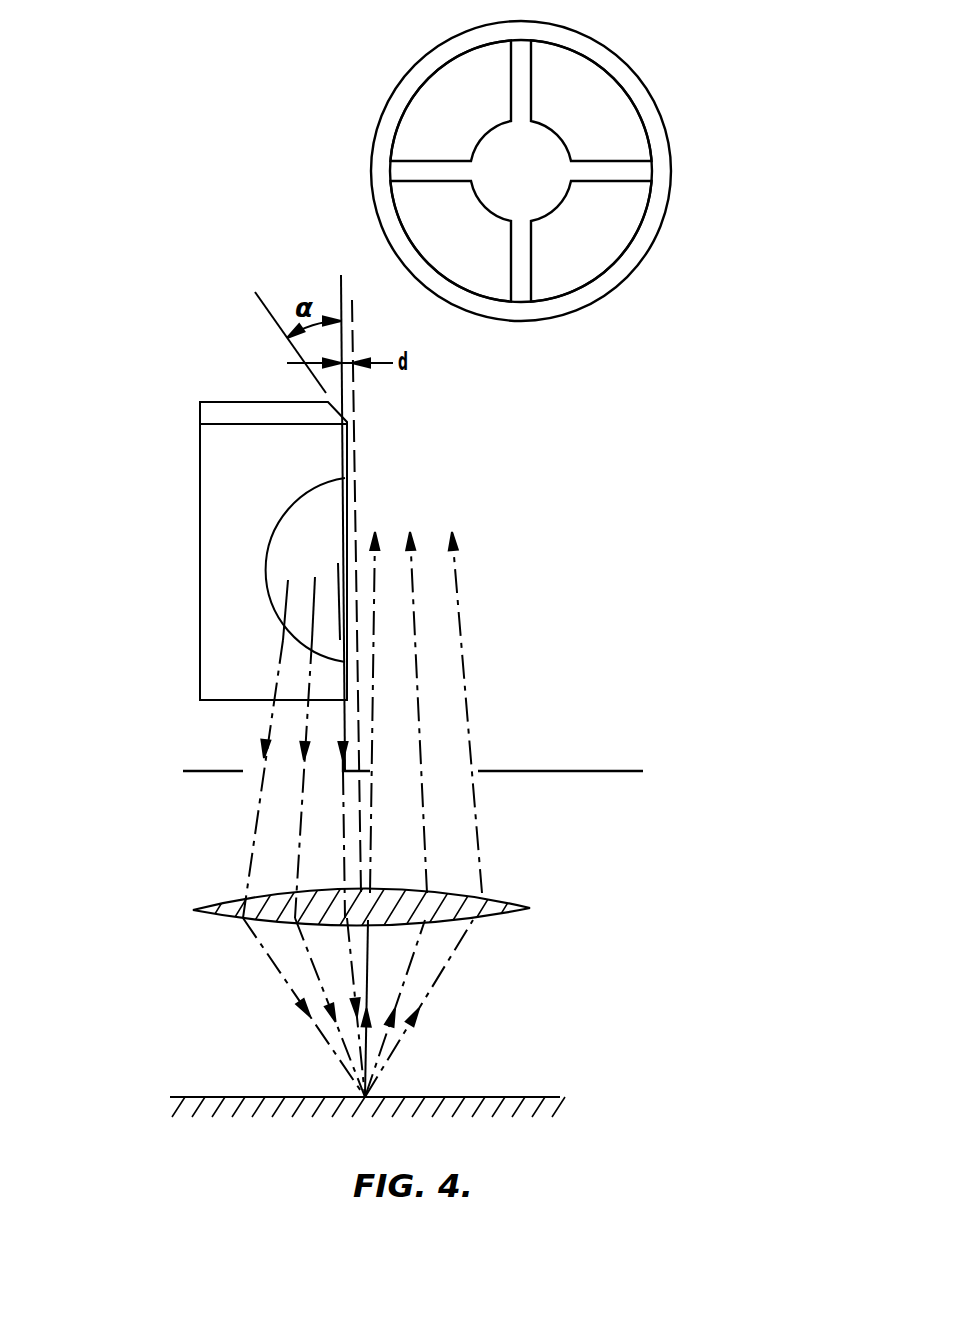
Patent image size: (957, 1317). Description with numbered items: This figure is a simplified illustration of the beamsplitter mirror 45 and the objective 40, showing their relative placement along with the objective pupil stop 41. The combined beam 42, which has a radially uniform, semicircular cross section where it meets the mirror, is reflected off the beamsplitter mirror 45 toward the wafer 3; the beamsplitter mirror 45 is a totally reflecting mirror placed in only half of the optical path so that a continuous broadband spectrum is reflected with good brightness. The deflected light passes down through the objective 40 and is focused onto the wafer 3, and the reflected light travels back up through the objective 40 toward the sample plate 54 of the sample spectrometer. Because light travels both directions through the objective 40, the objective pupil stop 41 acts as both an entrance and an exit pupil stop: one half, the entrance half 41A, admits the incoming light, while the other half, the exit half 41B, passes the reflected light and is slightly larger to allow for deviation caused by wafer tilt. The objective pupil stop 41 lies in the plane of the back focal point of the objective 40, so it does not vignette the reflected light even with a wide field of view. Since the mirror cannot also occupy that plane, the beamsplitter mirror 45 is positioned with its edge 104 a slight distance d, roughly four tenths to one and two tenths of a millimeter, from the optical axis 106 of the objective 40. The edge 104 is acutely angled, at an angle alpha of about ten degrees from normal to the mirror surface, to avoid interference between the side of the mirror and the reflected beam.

The objective pupil stop 41 is at (637, 260).
The entrance half of objective pupil stop 41A is at (435, 137).
The exit half of objective pupil stop 41B is at (633, 195).
The beamsplitter mirror 45 is at (207, 457).
The combined beam 42 is at (250, 548).
The edge of beamsplitter mirror 104 is at (349, 447).
The optical axis of objective 106 is at (352, 413).
The sample plate 54 is at (497, 682).
The objective 40 is at (525, 908).
The wafer 3 is at (530, 1097).